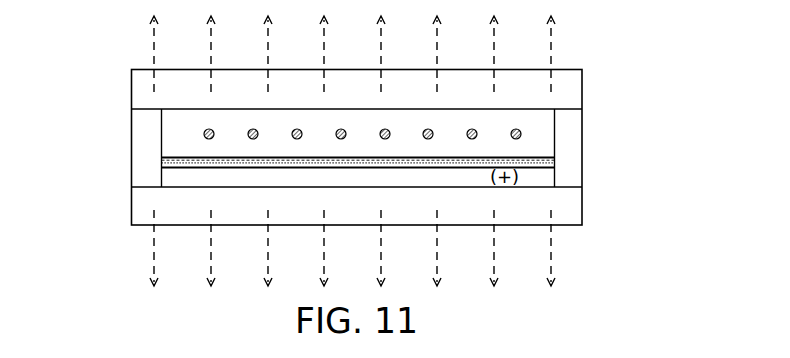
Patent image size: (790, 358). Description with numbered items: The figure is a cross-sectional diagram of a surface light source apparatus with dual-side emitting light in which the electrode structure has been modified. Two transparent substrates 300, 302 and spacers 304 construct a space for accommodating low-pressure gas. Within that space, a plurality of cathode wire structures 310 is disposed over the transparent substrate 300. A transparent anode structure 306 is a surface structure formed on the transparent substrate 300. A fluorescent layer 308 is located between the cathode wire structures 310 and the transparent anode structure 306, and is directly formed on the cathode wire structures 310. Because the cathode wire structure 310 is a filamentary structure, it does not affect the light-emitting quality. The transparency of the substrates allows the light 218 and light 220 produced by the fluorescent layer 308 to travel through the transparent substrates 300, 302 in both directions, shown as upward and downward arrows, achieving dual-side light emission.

The light 218 is at (156, 52).
The light 220 is at (550, 246).
The transparent substrate 300 is at (573, 201).
The transparent substrate 302 is at (572, 91).
The spacers 304 is at (572, 123).
The transparent anode structure 306 is at (557, 175).
The fluorescent layer 308 is at (557, 159).
The cathode wire structure 310 is at (203, 134).